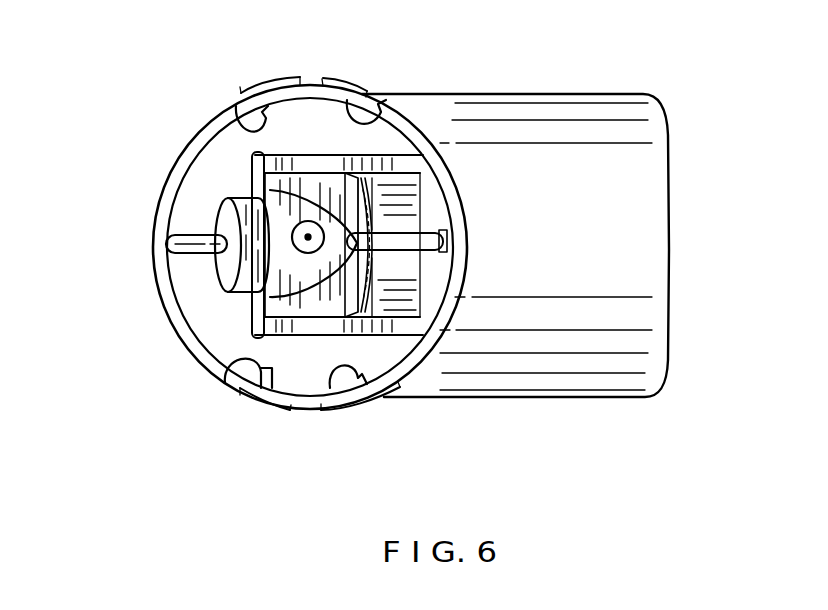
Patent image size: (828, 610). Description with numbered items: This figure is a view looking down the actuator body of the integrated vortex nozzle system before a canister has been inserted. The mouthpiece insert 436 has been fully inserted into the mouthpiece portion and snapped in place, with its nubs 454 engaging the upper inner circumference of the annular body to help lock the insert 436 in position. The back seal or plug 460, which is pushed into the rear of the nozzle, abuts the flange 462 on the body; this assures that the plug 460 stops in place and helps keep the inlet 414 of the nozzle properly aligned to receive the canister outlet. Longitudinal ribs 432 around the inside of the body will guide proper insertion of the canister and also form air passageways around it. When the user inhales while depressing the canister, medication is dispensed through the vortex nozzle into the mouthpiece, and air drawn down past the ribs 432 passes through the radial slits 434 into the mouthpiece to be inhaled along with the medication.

The inlet 414 is at (305, 254).
The longitudinal ribs 432 is at (390, 97).
The radial slits 434 is at (362, 183).
The mouthpiece insert 436 is at (543, 426).
The nubs 454 is at (452, 235).
The back seal or plug 460 is at (232, 200).
The flange 462 is at (178, 238).